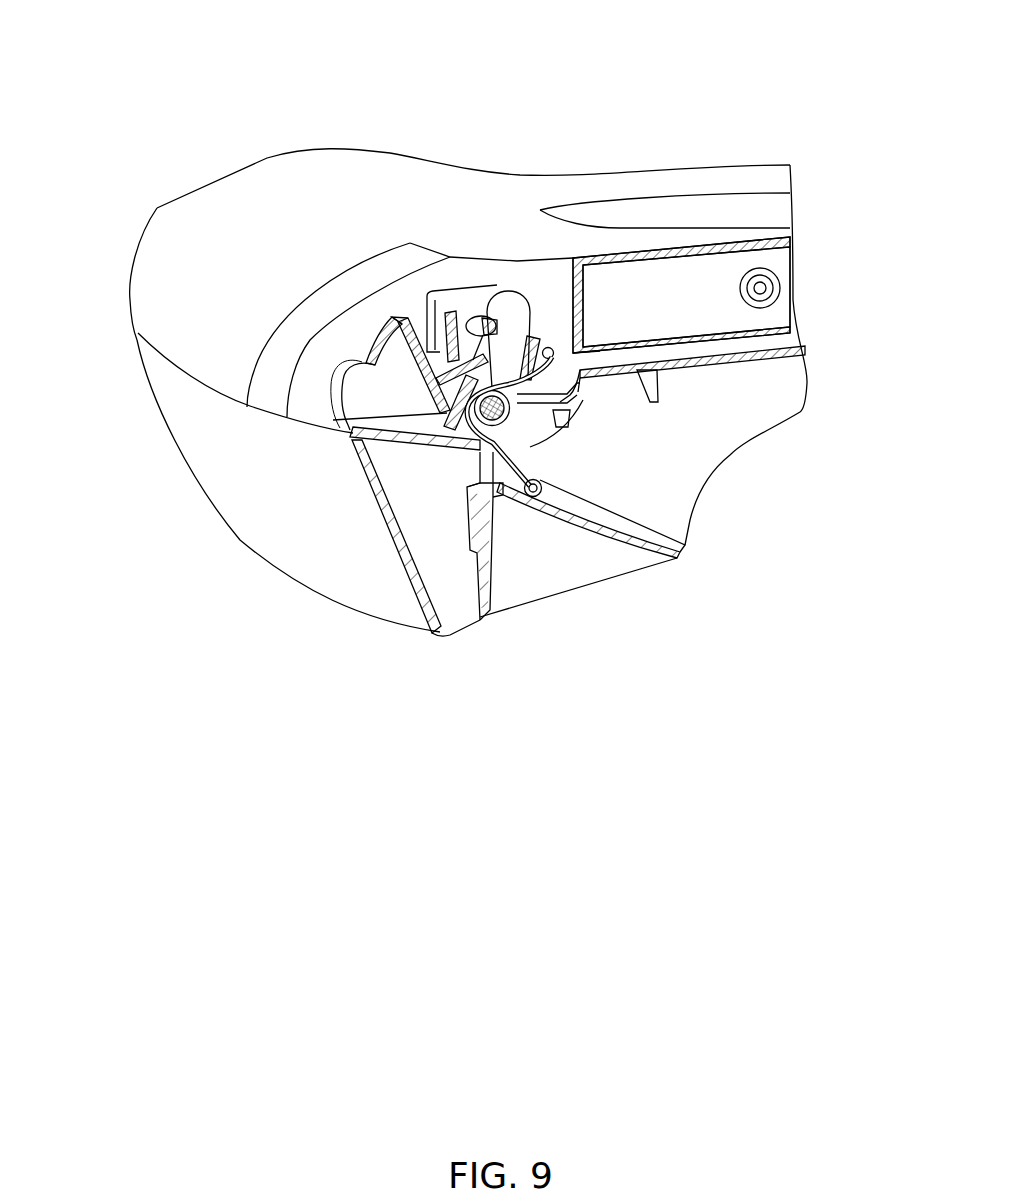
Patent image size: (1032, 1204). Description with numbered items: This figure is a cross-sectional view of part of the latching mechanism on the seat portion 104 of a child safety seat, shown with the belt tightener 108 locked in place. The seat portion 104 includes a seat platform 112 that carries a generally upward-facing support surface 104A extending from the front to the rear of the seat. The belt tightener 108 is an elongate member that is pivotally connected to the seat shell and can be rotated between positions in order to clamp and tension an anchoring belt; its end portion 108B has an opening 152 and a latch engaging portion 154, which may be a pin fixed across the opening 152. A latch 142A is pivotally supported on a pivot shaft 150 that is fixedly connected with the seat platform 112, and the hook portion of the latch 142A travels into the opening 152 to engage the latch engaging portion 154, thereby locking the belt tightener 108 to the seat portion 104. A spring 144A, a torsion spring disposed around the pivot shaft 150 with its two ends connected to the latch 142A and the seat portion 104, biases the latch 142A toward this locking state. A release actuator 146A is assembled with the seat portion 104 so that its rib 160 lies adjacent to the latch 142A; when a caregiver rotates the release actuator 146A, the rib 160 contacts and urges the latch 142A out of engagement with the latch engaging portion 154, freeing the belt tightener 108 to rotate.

The seat portion 104 is at (138, 423).
The seat platform 112 is at (178, 292).
The support surface 104A is at (403, 190).
The release actuator 146A is at (385, 330).
The opening 152 is at (470, 284).
The latch 142A is at (509, 300).
The latch engaging portion 154 is at (493, 320).
The rib 160 is at (485, 361).
The belt tightener 108 is at (710, 265).
The end portion 108B is at (577, 263).
The pivot shaft 150 is at (478, 443).
The spring 144A is at (687, 527).